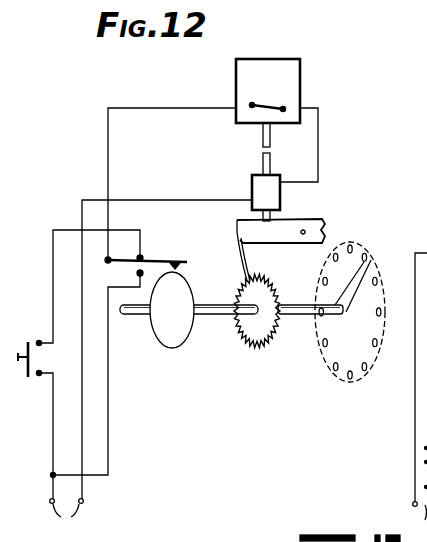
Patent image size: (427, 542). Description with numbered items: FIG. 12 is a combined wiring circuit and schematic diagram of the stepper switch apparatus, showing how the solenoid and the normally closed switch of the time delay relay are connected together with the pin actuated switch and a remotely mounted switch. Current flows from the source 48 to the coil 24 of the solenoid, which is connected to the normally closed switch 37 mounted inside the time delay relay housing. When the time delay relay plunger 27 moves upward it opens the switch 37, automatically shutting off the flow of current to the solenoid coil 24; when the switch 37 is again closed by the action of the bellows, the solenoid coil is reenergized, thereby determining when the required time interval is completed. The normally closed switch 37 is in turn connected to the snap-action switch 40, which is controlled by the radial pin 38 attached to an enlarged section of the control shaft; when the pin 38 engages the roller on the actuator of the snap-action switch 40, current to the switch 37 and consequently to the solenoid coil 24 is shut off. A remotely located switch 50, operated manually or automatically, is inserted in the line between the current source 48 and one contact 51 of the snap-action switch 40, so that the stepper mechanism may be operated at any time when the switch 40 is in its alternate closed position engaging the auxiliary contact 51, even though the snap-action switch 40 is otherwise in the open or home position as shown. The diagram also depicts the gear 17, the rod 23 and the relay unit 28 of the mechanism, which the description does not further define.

The gear wheel 17 is at (253, 342).
The rod 23 is at (263, 170).
The solenoid coil 24 is at (280, 197).
The time delay relay plunger 27 is at (263, 140).
The control unit 28 is at (275, 59).
The normally closed switch 37 is at (283, 102).
The radial pin 38 is at (180, 265).
The snap-action switch 40 is at (165, 261).
The source 48 is at (63, 523).
The remotely located switch 50 is at (26, 360).
The auxiliary contact 51 is at (142, 256).